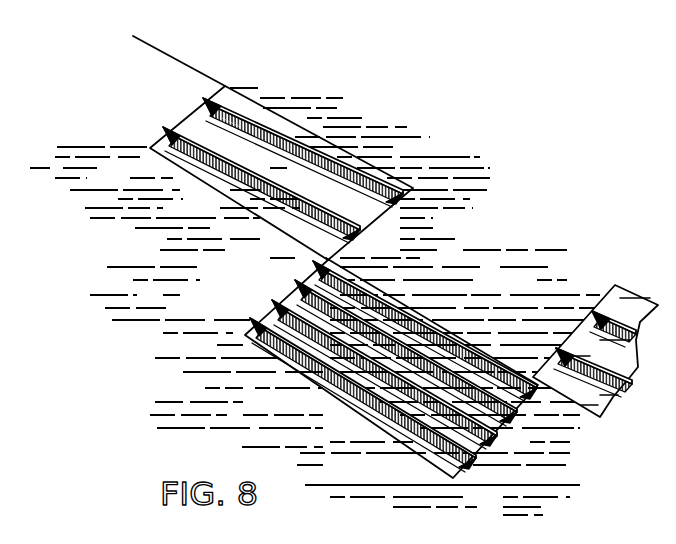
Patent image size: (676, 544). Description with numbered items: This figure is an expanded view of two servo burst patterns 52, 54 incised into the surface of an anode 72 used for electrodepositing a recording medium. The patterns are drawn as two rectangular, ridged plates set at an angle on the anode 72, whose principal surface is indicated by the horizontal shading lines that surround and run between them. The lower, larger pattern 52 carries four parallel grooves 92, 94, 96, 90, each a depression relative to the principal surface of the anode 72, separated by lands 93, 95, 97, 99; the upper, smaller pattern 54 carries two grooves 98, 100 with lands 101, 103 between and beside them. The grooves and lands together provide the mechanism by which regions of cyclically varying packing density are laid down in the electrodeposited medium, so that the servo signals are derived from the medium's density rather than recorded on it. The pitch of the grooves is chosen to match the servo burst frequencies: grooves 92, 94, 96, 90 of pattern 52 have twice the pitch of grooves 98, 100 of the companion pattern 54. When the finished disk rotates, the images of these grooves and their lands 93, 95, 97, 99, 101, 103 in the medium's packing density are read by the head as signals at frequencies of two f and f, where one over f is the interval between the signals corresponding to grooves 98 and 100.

The servo burst pattern 52 is at (246, 148).
The servo burst pattern 54 is at (373, 379).
The anode 72 is at (443, 218).
The groove 90 is at (318, 266).
The groove 92 is at (255, 331).
The land 93 is at (473, 462).
The groove 94 is at (276, 306).
The land 95 is at (493, 428).
The groove 96 is at (300, 286).
The land 97 is at (503, 403).
The groove 98 is at (172, 131).
The land 99 is at (533, 375).
The groove 100 is at (220, 97).
The land 101 is at (168, 166).
The land 103 is at (197, 120).